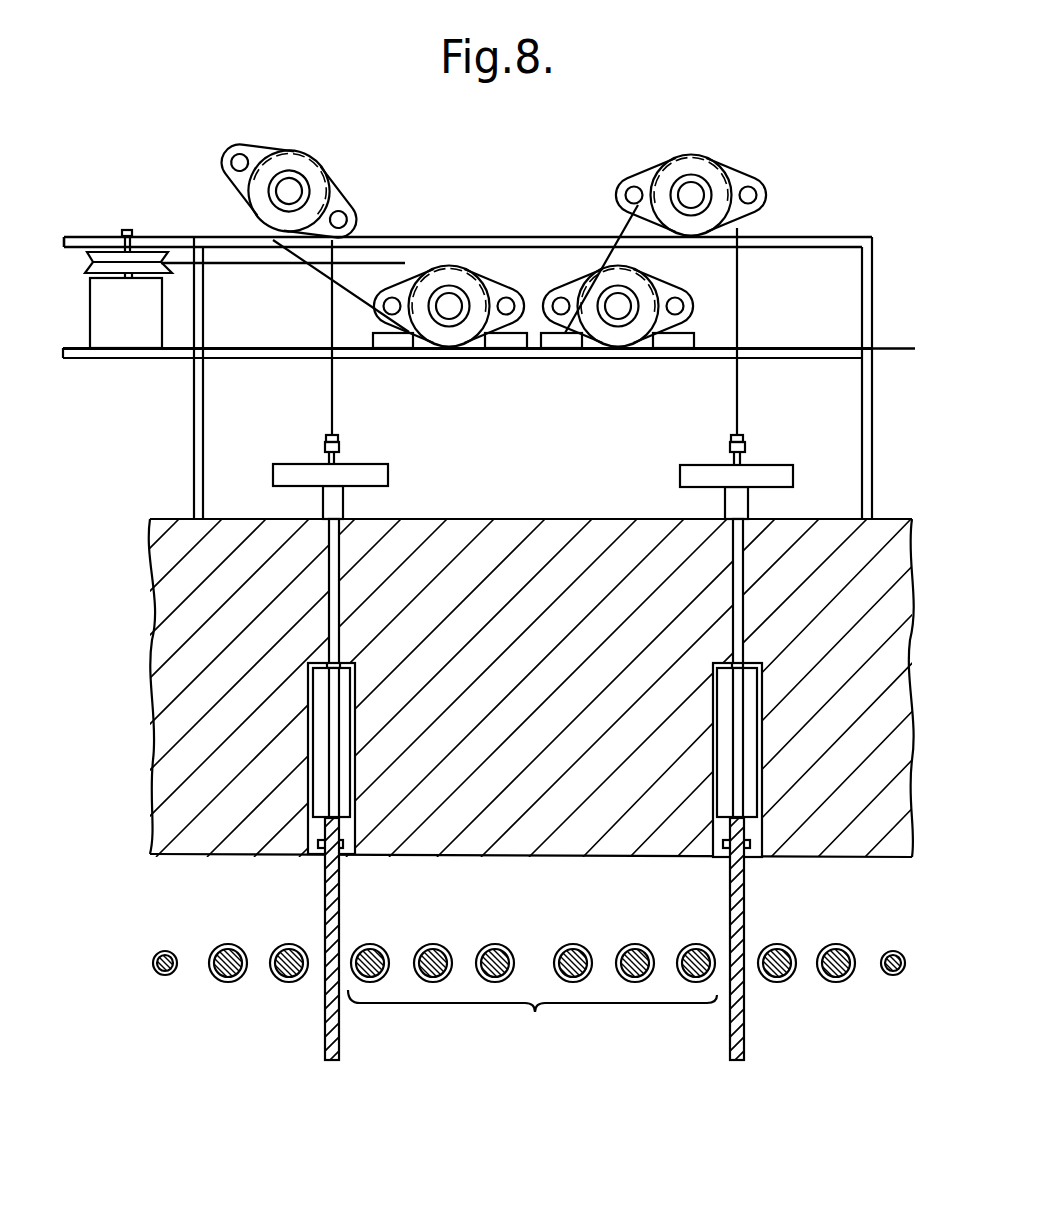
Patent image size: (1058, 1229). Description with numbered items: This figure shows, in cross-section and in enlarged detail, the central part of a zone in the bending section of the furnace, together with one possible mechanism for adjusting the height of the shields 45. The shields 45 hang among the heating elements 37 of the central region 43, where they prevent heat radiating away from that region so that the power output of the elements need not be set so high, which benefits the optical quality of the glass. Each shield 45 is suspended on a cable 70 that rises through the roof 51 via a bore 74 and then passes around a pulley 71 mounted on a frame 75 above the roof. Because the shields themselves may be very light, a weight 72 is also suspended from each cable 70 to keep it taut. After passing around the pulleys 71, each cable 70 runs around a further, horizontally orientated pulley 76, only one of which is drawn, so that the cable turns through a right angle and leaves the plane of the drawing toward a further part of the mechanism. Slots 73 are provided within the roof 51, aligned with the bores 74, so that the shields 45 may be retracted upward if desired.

The heating elements 37 is at (578, 945).
The central region 43 is at (532, 1023).
The shields 45 is at (325, 1022).
The roof 51 is at (818, 552).
The cables 70 is at (268, 265).
The pulleys 71 is at (448, 303).
The weight 72 is at (388, 466).
The slots 73 is at (317, 773).
The bores 74 is at (333, 552).
The frame 75 is at (866, 283).
The horizontally orientated pulleys 76 is at (107, 255).